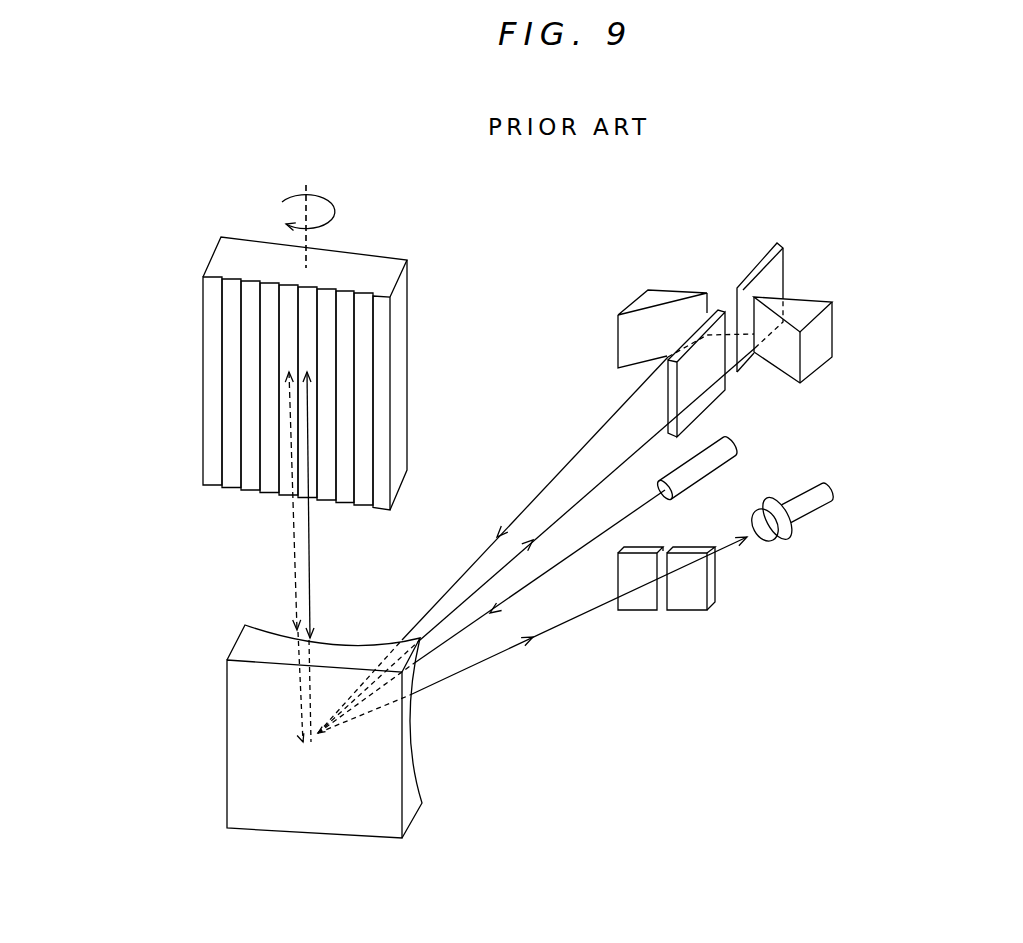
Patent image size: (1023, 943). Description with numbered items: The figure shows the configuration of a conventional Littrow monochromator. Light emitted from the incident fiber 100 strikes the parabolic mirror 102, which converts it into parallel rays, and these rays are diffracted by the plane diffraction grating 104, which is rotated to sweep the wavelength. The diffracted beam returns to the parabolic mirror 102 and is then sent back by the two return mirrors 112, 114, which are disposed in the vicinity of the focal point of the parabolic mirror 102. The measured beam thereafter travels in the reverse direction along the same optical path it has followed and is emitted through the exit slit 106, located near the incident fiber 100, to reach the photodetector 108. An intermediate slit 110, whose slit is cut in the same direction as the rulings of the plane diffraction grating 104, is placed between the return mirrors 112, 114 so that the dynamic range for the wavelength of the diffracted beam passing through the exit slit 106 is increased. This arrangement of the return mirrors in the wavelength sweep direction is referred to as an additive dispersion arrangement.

The incident fiber 100 is at (730, 453).
The parabolic mirror 102 is at (410, 792).
The plane diffraction grating 104 is at (372, 262).
The exit slit 106 is at (712, 593).
The photodetector 108 is at (830, 497).
The intermediate slit 110 is at (782, 260).
The return mirror 112 is at (813, 305).
The return mirror 114 is at (650, 295).